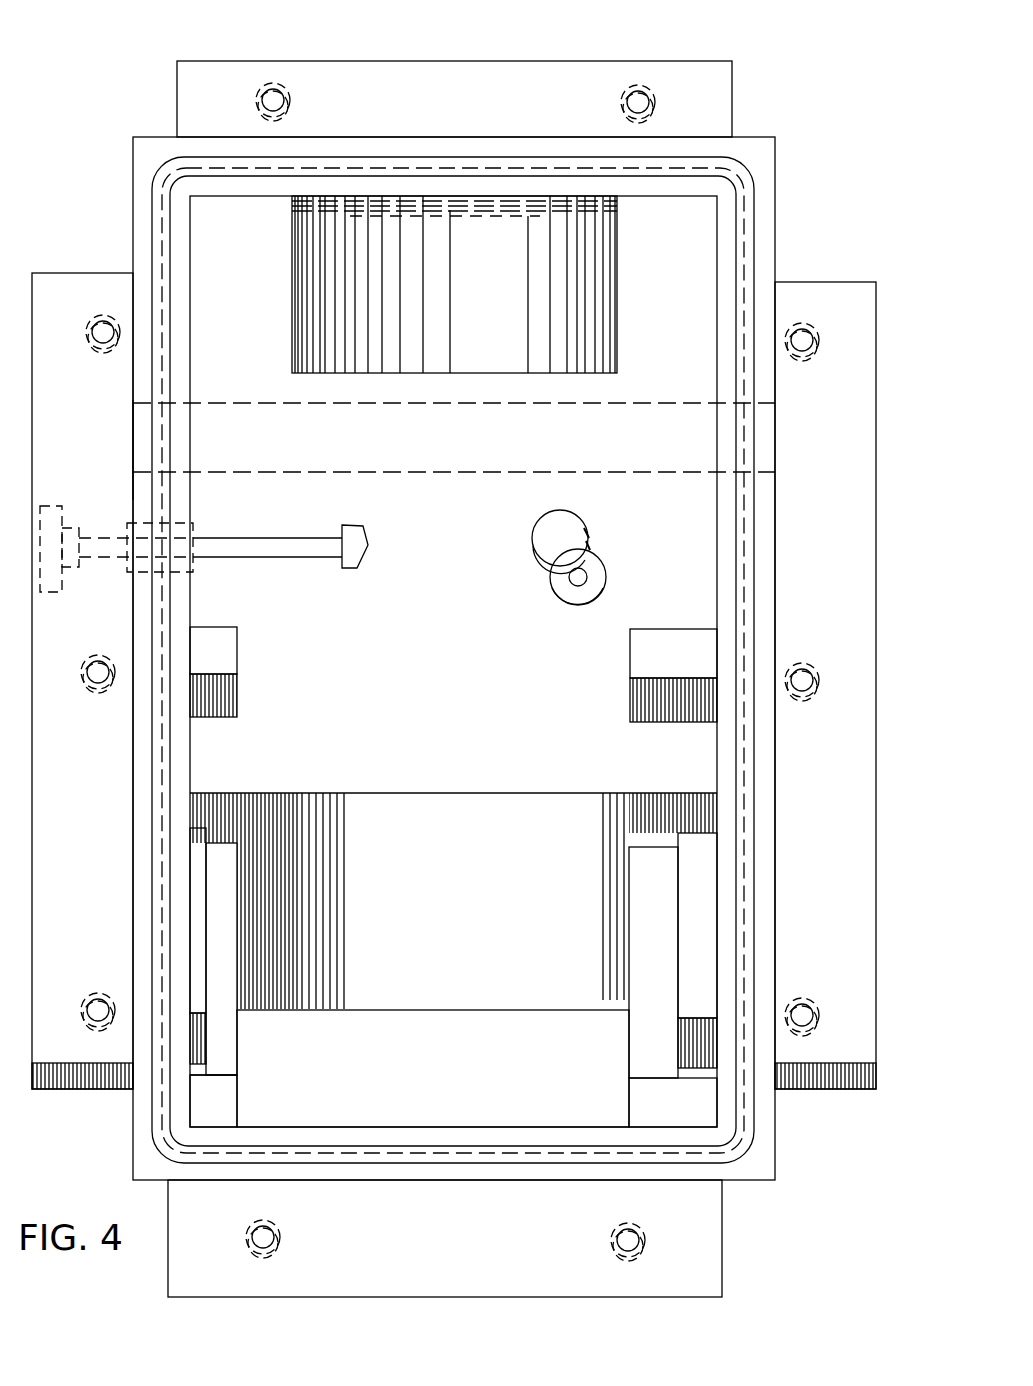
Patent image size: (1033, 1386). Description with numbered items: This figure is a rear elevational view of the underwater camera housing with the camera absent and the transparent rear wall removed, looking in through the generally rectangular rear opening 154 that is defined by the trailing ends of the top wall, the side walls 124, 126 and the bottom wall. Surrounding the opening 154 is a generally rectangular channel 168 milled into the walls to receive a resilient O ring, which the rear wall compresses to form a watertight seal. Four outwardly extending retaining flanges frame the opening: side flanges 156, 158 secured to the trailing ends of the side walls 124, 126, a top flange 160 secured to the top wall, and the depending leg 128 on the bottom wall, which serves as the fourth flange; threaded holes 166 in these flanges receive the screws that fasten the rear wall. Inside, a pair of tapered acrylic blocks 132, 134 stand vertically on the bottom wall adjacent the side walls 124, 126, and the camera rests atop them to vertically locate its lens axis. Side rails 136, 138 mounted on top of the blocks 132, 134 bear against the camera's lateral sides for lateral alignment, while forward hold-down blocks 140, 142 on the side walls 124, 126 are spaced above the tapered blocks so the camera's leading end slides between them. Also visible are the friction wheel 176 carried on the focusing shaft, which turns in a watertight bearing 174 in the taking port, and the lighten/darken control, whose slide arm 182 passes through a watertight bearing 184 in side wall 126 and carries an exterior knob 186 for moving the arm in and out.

The side wall 124 is at (776, 562).
The side wall 126 is at (133, 487).
The leg 128 is at (722, 1230).
The tapered acrylic block 132 is at (629, 1056).
The tapered acrylic block 134 is at (237, 1058).
The side rail 136 is at (678, 903).
The side rail 138 is at (206, 897).
The forward hold-down block 140 is at (638, 636).
The forward hold-down block 142 is at (225, 654).
The rear opening 154 is at (705, 268).
The side flange 156 is at (836, 288).
The side flange 158 is at (53, 283).
The top flange 160 is at (470, 78).
The threaded holes 166 is at (822, 340).
The channel 168 is at (503, 1135).
The watertight bearing 174 is at (600, 578).
The friction wheel 176 is at (575, 522).
The slide arm 182 is at (297, 553).
The watertight bearing 184 is at (197, 528).
The knob 186 is at (58, 576).